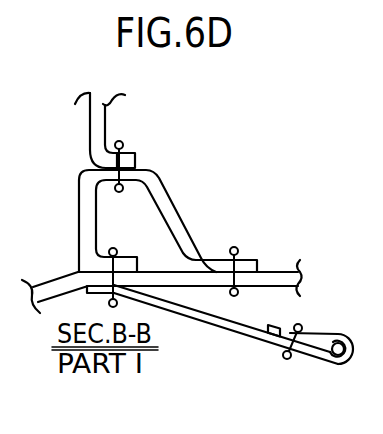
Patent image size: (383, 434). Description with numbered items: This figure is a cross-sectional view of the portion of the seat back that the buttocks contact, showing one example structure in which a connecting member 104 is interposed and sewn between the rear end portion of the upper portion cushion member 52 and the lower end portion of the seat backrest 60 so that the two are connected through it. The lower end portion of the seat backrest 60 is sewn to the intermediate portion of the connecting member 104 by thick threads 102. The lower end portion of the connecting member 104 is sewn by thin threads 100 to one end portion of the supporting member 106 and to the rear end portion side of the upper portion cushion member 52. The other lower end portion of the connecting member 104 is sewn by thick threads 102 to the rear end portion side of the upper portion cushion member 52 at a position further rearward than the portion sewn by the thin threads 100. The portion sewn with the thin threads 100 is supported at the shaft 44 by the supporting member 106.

The seat backrest 60 is at (96, 132).
The thick threads 102 is at (122, 142).
The connecting member 104 is at (166, 192).
The thin threads 100 is at (109, 249).
The upper portion cushion member 52 is at (48, 283).
The supporting member 106 is at (256, 324).
The shaft 44 is at (340, 358).